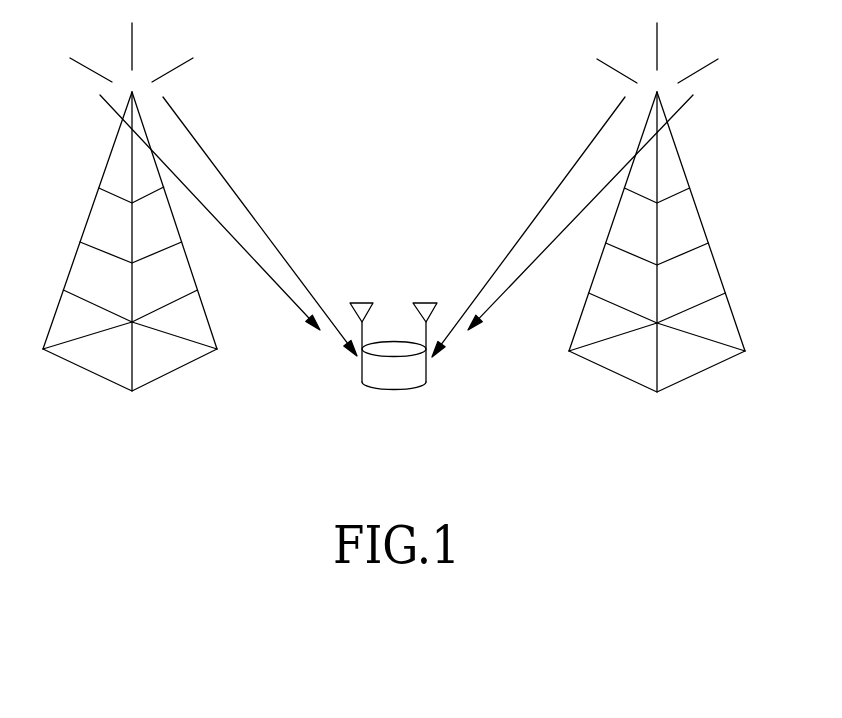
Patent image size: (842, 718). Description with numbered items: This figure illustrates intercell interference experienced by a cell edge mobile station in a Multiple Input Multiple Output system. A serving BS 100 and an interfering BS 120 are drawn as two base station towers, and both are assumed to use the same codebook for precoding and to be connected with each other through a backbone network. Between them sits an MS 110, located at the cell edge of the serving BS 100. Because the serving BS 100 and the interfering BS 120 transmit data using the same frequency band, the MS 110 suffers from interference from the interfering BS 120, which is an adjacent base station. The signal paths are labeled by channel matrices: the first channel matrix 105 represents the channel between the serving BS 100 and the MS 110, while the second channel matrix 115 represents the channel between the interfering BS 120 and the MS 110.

The serving BS 100 is at (88, 222).
The channel matrix H1 105 is at (253, 245).
The MS 110 is at (427, 368).
The channel matrix H2 115 is at (506, 277).
The interfering BS 120 is at (702, 221).